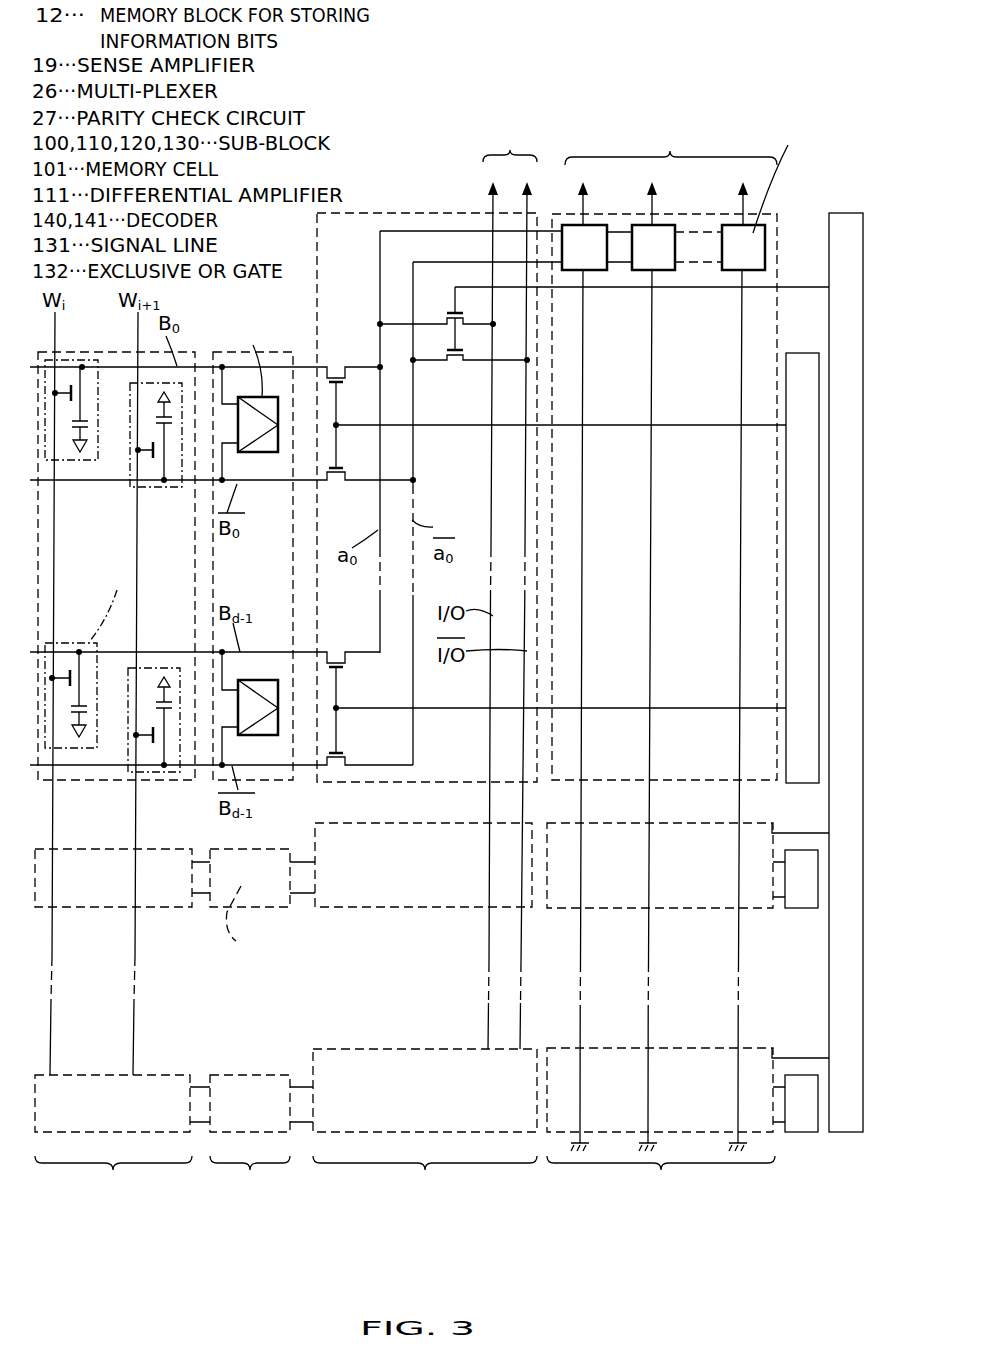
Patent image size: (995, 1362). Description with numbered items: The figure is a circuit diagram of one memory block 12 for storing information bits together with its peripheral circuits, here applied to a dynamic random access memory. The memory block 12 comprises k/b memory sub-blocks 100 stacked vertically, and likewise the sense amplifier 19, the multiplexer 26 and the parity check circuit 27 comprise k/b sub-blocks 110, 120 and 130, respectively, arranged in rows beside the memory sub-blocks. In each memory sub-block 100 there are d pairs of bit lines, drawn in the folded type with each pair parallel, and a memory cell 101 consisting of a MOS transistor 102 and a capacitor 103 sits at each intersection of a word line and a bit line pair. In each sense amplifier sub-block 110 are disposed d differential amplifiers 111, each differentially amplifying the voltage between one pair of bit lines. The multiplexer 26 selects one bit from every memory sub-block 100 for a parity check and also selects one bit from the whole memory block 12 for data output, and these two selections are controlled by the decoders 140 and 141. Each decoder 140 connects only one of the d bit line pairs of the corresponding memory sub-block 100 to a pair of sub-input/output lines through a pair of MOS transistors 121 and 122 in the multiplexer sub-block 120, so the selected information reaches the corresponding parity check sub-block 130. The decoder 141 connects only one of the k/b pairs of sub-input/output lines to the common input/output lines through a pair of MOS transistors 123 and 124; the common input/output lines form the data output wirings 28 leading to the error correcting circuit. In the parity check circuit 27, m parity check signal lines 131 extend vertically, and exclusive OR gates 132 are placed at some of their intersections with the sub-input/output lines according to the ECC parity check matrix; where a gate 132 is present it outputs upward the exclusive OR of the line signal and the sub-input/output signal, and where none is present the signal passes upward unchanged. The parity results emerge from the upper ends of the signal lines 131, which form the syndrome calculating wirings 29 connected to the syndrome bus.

The memory block 12 is at (113, 1210).
The sense amplifier 19 is at (272, 1199).
The multiplexer 26 is at (425, 1193).
The parity check circuit 27 is at (661, 1199).
The data output wirings 28 is at (510, 590).
The syndrome calculating wirings 29 is at (671, 177).
The memory sub-block 100 is at (68, 350).
The memory cell 101 is at (62, 462).
The MOS transistor 102 is at (88, 393).
The capacitor 103 is at (98, 430).
The sense amplifier sub-block 110 is at (212, 356).
The differential amplifier 111 is at (267, 455).
The multiplexer sub-block 120 is at (435, 211).
The MOS transistor 121 is at (337, 370).
The MOS transistor 122 is at (338, 483).
The MOS transistor 123 is at (453, 312).
The MOS transistor 124 is at (453, 361).
The parity check sub-block 130 is at (680, 212).
The parity check signal line 131 is at (650, 505).
The exclusive OR gate 132 is at (640, 272).
The decoder 140 is at (806, 352).
The decoder 141 is at (845, 212).